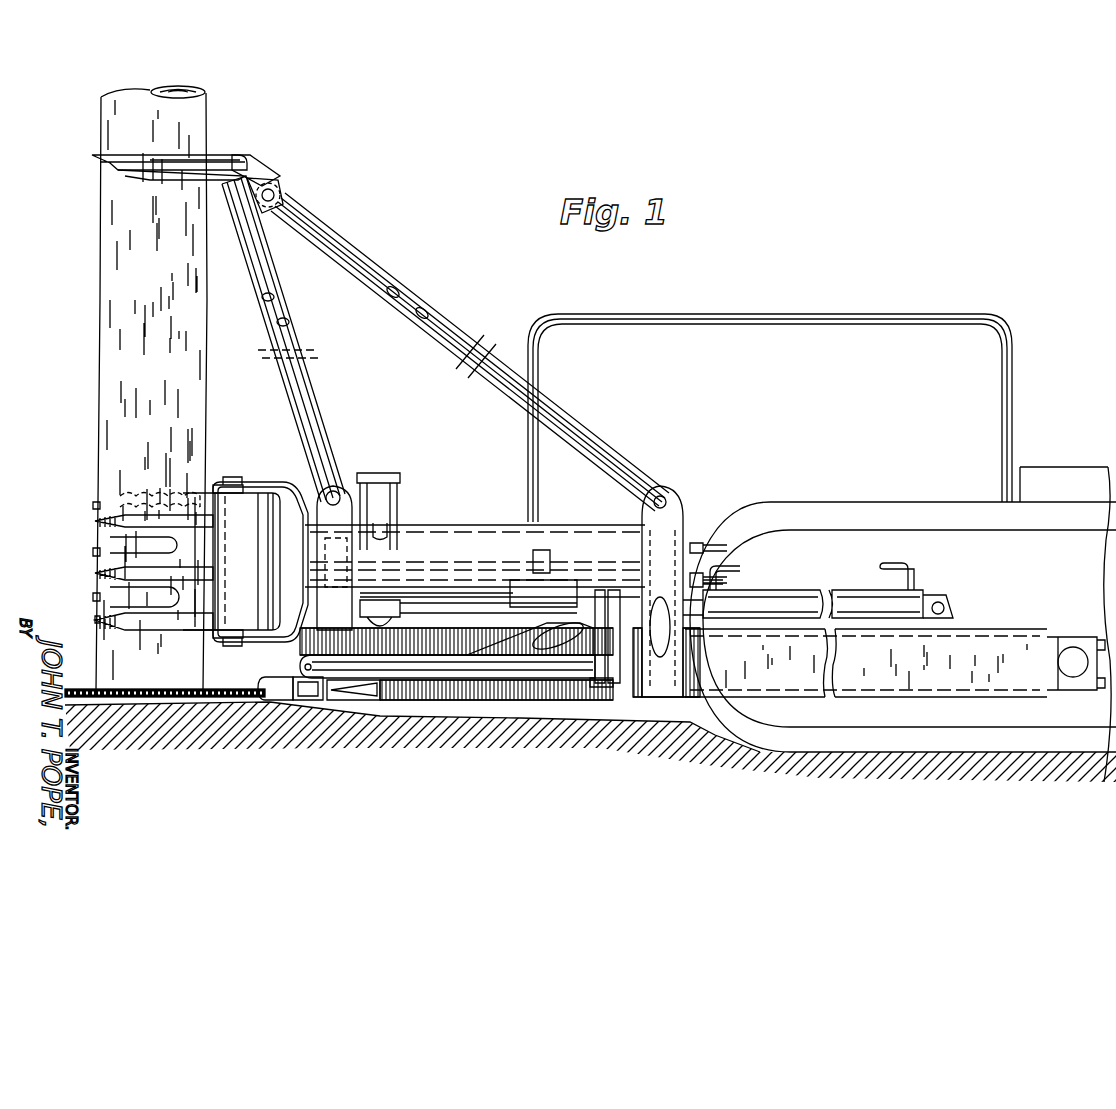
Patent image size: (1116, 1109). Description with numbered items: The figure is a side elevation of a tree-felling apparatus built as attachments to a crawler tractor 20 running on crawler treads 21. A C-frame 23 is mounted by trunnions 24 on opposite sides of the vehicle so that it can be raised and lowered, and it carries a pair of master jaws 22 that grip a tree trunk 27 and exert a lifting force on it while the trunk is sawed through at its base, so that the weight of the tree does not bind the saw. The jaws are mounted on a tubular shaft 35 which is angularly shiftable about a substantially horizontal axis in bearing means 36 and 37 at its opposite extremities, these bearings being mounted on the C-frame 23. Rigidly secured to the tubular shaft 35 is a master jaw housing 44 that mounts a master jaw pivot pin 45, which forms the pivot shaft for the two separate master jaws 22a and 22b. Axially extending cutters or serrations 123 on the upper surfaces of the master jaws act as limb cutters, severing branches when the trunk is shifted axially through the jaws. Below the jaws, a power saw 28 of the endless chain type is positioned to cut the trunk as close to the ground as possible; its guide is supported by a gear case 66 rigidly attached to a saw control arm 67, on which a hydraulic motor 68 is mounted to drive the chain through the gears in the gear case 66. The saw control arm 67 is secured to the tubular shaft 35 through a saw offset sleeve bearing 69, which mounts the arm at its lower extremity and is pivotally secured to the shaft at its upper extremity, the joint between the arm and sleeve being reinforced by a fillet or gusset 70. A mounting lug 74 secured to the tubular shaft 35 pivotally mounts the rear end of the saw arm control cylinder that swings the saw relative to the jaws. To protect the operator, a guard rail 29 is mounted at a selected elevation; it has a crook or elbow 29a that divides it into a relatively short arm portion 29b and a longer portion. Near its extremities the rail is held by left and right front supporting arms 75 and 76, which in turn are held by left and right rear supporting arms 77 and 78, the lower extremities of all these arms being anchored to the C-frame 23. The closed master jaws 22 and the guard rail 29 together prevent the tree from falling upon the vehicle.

The crawler tractor 20 is at (1014, 348).
The crawler treads 21 is at (870, 745).
The master jaws 22 is at (95, 526).
The master jaw 22a is at (95, 508).
The master jaw 22b is at (95, 576).
The C-frame 23 is at (980, 626).
The trunnions 24 is at (1075, 640).
The tree trunk 27 is at (100, 375).
The power saw 28 is at (233, 700).
The guard rail 29 is at (150, 158).
The crook or elbow 29a is at (240, 155).
The short arm portion 29b is at (150, 178).
The tubular shaft 35 is at (435, 525).
The bearing means 36 is at (347, 490).
The bearing means 37 is at (683, 522).
The master jaw housing 44 is at (296, 487).
The master jaw pivot pin 45 is at (232, 476).
The gear case 66 is at (300, 702).
The saw control arm 67 is at (446, 678).
The hydraulic motor 68 is at (335, 702).
The saw offset sleeve bearing 69 is at (606, 683).
The fillet or gusset 70 is at (552, 640).
The mounting lug 74 is at (500, 565).
The left front supporting arm 75 is at (283, 286).
The right front supporting arm 76 is at (290, 312).
The left rear supporting arm 77 is at (378, 262).
The right rear supporting arm 78 is at (416, 298).
The axially extending cutters or serrations 123 is at (160, 512).